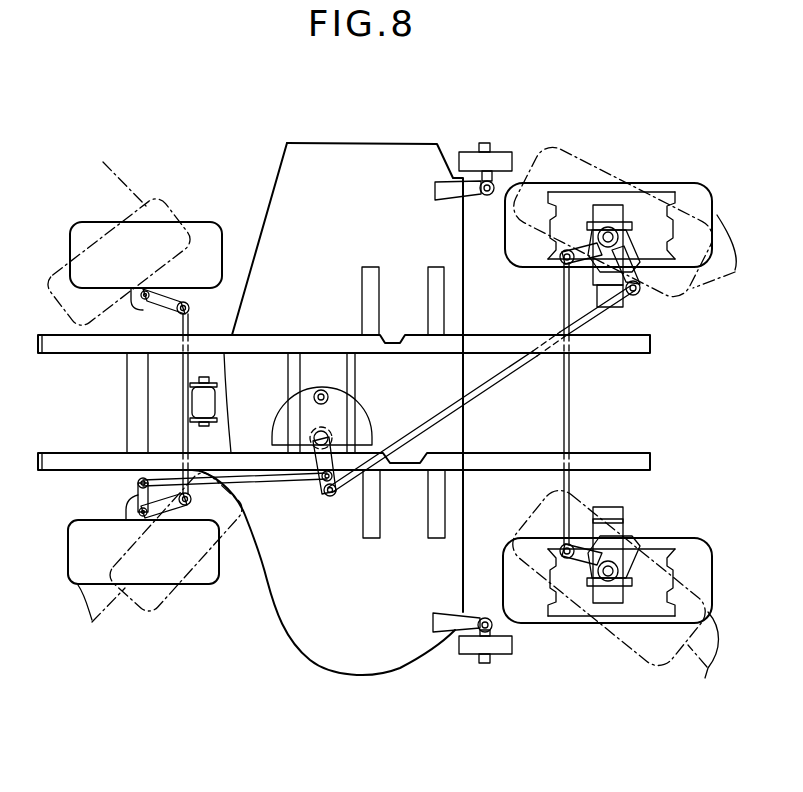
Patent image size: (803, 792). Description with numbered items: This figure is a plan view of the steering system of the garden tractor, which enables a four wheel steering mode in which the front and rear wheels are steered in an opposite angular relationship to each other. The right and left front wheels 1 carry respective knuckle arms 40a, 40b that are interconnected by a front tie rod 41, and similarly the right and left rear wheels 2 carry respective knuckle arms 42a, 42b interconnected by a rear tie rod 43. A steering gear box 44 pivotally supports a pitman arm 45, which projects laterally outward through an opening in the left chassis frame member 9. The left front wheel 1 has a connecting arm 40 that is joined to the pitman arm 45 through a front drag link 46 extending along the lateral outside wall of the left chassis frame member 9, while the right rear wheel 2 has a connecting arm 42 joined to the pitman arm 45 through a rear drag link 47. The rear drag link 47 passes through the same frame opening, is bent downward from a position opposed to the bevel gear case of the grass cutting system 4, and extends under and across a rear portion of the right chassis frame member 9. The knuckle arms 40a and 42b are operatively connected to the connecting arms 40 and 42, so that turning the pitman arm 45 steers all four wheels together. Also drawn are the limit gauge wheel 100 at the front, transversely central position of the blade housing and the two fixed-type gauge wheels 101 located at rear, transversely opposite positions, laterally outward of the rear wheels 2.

The front wheels 1 is at (88, 222).
The rear wheels 2 is at (627, 423).
The grass cutting system 4 is at (270, 187).
The chassis frame member 9 is at (52, 472).
The connecting arm 40 is at (136, 494).
The knuckle arm 40a is at (173, 516).
The knuckle arm 40b is at (173, 317).
The front tie rod 41 is at (192, 331).
The connecting arm 42 is at (638, 273).
The knuckle arm 42a is at (572, 568).
The knuckle arm 42b is at (574, 210).
The rear tie rod 43 is at (572, 400).
The steering gear box 44 is at (355, 425).
The pitman arm 45 is at (325, 497).
The front drag link 46 is at (280, 474).
The rear drag link 47 is at (517, 376).
The limit gauge wheel 100 is at (218, 397).
The gauge wheels 101 is at (503, 660).